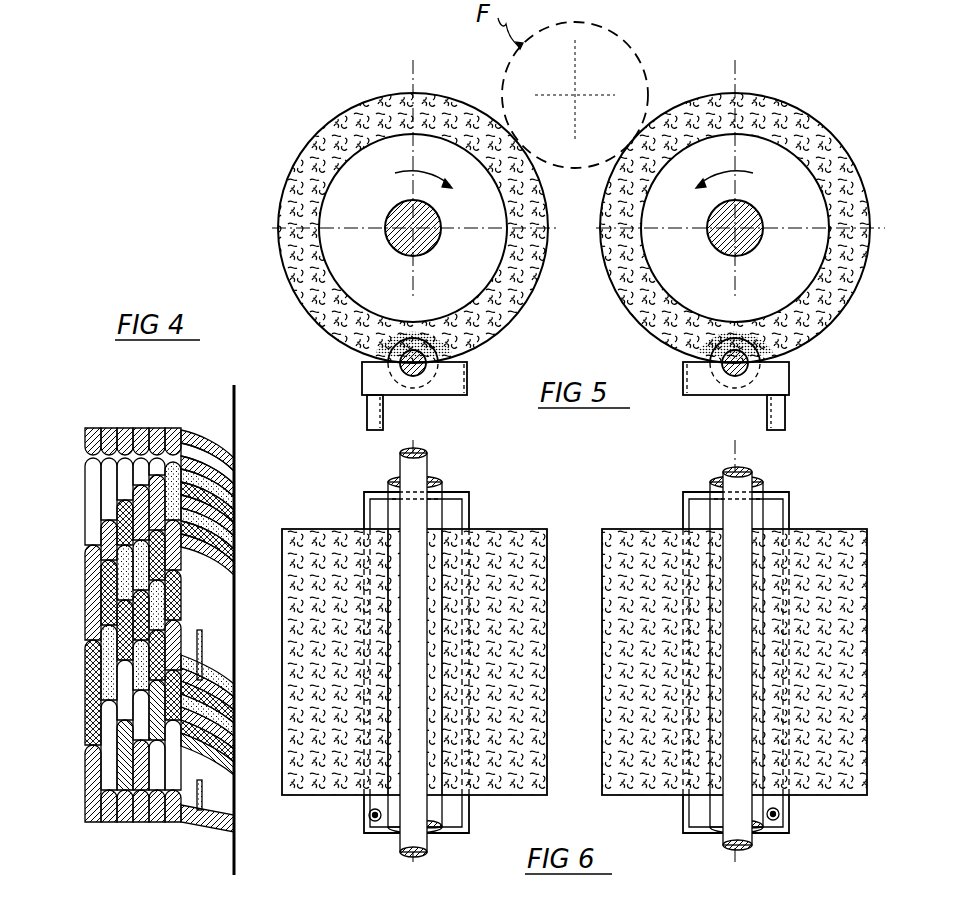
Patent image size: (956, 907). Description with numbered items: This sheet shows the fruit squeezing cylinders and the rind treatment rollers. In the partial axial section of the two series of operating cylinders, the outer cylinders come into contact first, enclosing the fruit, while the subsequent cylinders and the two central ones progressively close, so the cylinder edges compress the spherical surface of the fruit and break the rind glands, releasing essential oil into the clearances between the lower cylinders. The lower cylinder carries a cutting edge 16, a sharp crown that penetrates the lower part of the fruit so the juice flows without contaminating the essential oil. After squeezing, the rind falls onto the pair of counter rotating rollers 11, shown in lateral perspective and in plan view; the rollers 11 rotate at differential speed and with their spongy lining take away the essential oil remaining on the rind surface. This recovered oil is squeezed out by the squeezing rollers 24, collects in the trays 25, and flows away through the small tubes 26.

In FIG. 5, the counter rotating rollers 11 is at (384, 108).
In FIG. 6, the counter rotating rollers 11 is at (516, 540).
In FIG. 4, the cutting edge 16 is at (201, 649).
In FIG. 5, the squeezing rollers 24 is at (396, 351).
In FIG. 6, the squeezing rollers 24 is at (398, 510).
In FIG. 5, the trays 25 is at (447, 384).
In FIG. 6, the trays 25 is at (366, 515).
In FIG. 5, the small tubes 26 is at (378, 415).
In FIG. 6, the small tubes 26 is at (364, 824).